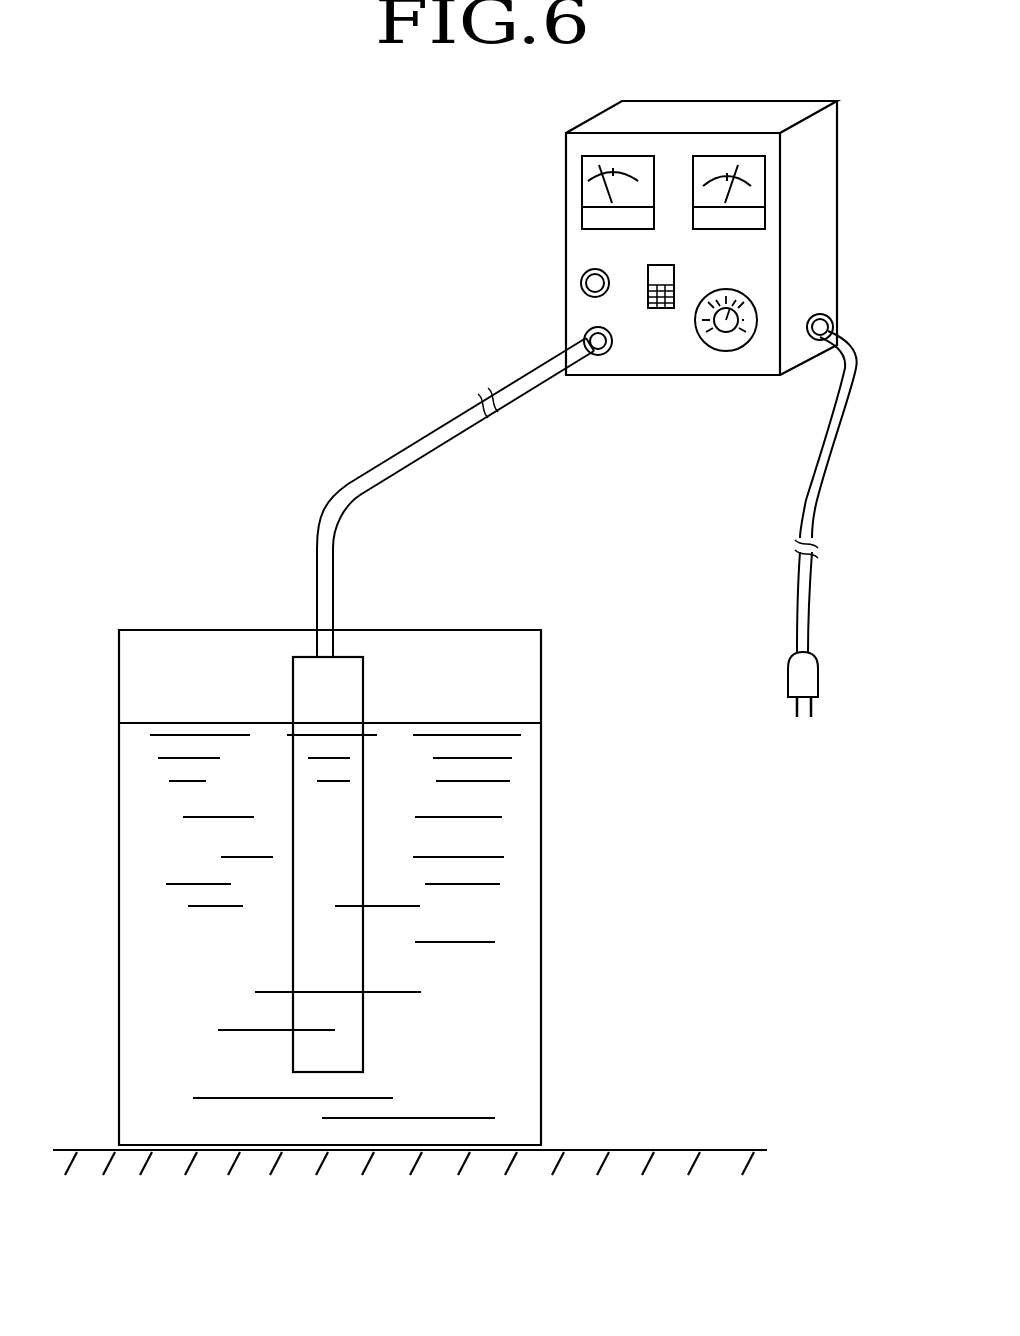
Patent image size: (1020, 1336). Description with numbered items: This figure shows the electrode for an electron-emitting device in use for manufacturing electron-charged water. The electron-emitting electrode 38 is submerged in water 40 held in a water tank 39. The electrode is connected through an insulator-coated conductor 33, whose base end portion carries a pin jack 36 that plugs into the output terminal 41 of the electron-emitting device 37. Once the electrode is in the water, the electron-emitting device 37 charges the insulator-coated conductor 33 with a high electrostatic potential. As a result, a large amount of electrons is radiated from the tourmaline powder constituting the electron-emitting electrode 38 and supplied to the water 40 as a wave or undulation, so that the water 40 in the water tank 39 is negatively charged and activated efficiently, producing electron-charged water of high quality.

The insulator-coated conductor 33 is at (320, 563).
The pin jack 36 is at (595, 355).
The electron-emitting device 37 is at (673, 363).
The electron-emitting electrode 38 is at (363, 968).
The water tank 39 is at (542, 805).
The water 40 is at (497, 1070).
The output terminal 41 is at (592, 335).